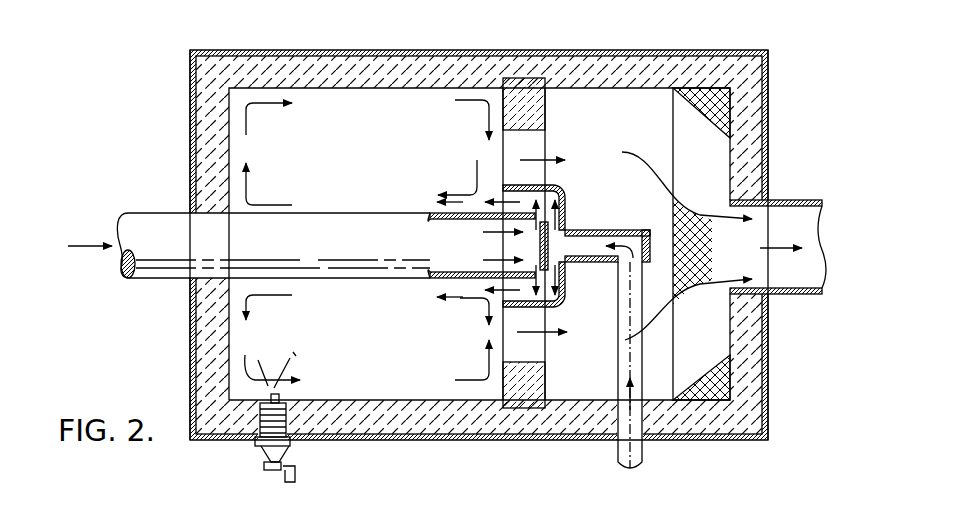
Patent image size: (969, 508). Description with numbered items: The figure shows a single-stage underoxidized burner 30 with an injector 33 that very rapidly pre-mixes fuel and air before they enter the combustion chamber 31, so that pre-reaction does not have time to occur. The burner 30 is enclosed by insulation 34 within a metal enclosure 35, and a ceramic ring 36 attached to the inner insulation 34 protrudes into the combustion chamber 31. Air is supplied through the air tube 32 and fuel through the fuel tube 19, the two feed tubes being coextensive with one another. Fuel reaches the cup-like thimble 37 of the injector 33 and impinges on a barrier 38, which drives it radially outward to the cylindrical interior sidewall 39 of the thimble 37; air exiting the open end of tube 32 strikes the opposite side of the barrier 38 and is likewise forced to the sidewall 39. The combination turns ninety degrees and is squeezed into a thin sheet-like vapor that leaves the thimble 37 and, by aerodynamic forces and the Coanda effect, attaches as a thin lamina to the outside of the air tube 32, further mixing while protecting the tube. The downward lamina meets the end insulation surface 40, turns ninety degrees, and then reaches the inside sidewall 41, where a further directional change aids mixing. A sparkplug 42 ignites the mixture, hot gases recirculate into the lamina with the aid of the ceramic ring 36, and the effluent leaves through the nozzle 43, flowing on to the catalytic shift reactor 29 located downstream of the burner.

The fuel tube 19 is at (643, 452).
The catalytic shift reactor 29 is at (707, 140).
The burner 30 is at (467, 50).
The combustion chamber 31 is at (371, 147).
The air tube 32 is at (165, 216).
The injector 33 is at (565, 188).
The insulation 34 is at (367, 63).
The metal enclosure 35 is at (285, 50).
The ceramic ring 36 is at (545, 385).
The thimble 37 is at (567, 281).
The barrier 38 is at (570, 223).
The thimble sidewall 39 is at (558, 308).
The end insulation surface 40 is at (230, 343).
The inside sidewall 41 is at (352, 399).
The sparkplug 42 is at (287, 458).
The nozzle 43 is at (792, 292).